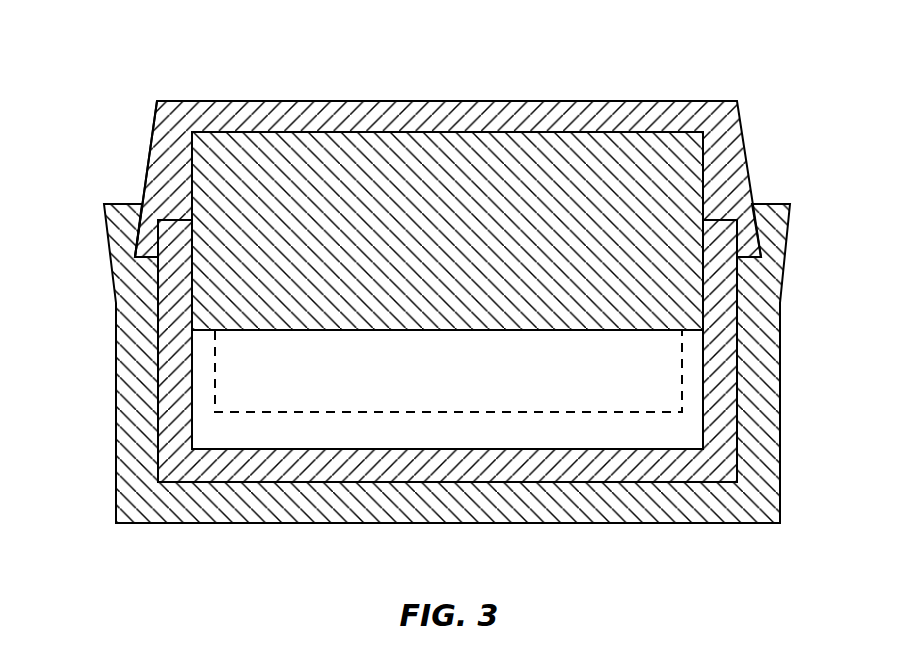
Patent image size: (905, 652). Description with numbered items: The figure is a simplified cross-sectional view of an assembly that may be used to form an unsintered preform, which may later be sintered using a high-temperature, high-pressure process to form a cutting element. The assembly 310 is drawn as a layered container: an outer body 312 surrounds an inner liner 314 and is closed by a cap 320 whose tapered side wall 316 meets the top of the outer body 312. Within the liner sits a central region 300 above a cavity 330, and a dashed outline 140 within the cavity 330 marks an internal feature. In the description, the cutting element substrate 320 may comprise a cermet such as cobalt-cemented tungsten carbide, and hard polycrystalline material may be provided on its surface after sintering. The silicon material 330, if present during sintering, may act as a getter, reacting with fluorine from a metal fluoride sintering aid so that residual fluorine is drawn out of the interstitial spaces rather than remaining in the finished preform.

The internal component 140 is at (633, 356).
The core body 300 is at (413, 168).
The housing assembly 310 is at (438, 299).
The outer housing 312 is at (128, 333).
The inner liner 314 is at (328, 468).
The tapered side wall 316 is at (170, 162).
The cutting element substrate 320 is at (677, 175).
The silicon material 330 is at (587, 427).